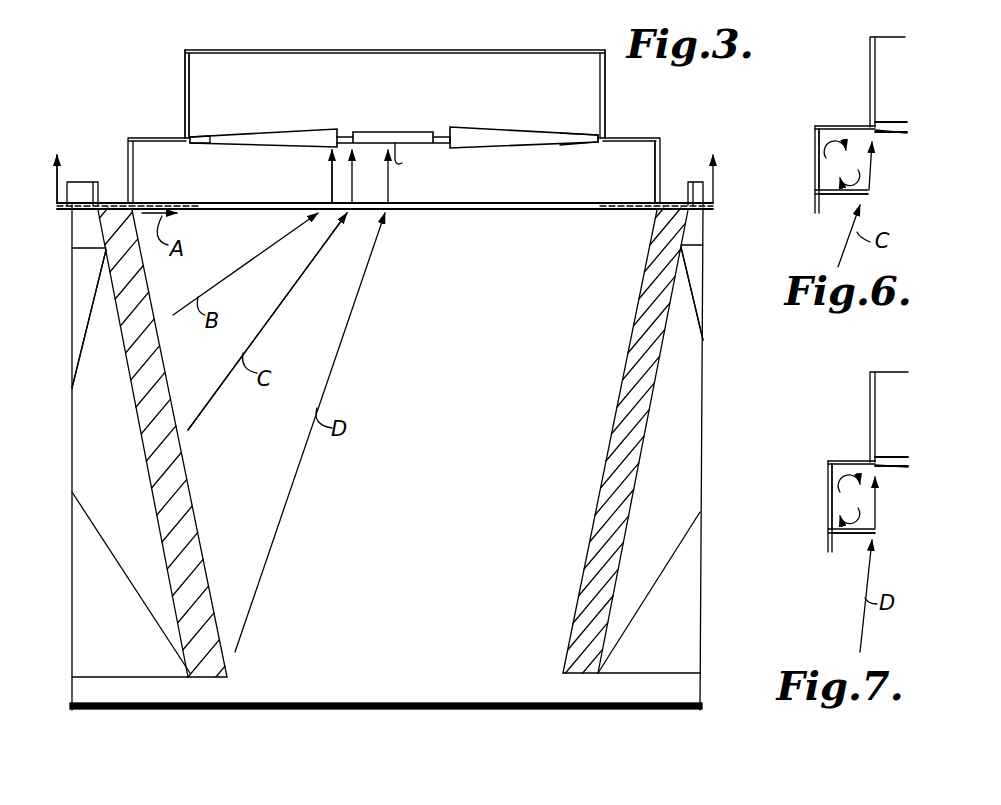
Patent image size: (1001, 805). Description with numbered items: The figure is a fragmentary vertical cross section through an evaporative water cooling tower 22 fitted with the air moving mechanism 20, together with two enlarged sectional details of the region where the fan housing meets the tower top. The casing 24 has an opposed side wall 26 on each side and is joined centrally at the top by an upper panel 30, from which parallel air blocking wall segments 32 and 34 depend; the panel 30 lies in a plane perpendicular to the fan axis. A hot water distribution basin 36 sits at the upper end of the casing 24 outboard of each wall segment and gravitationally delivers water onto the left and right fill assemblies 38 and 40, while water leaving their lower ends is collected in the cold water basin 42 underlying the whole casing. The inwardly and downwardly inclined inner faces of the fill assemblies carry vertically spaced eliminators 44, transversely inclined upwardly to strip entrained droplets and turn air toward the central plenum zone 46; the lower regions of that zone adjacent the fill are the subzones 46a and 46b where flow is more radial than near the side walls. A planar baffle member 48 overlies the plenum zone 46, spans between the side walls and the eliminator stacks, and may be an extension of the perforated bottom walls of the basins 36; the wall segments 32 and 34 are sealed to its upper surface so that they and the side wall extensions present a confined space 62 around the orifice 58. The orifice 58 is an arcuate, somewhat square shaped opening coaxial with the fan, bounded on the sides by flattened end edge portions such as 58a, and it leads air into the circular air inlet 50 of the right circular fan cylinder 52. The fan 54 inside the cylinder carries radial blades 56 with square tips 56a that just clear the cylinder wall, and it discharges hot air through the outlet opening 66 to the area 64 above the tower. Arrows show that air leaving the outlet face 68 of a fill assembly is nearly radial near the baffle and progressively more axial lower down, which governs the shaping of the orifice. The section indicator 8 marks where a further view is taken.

In FIG. 3, the air moving mechanism 20 is at (490, 68).
In FIG. 3, the cooling tower 22 is at (710, 410).
In FIG. 3, the casing 24 is at (700, 228).
In FIG. 3, the side wall 26 is at (508, 668).
In FIG. 6, the side wall 26 is at (815, 171).
In FIG. 7, the side wall 26 is at (828, 474).
In FIG. 3, the upper panel 30 is at (615, 136).
In FIG. 6, the upper panel 30 is at (840, 126).
In FIG. 7, the upper panel 30 is at (845, 460).
In FIG. 3, the wall segment 32 is at (130, 158).
In FIG. 3, the wall segment 34 is at (660, 140).
In FIG. 3, the hot water distribution basin 36 is at (80, 184).
In FIG. 3, the fill assembly 38 is at (131, 460).
In FIG. 3, the fill assembly 40 is at (688, 549).
In FIG. 3, the cold water basin 42 is at (298, 703).
In FIG. 3, the eliminators 44 is at (178, 478).
In FIG. 3, the plenum zone 46 is at (299, 432).
In FIG. 3, the subzone 46a is at (245, 290).
In FIG. 3, the subzone 46b is at (564, 355).
In FIG. 3, the baffle member 48 is at (642, 212).
In FIG. 6, the baffle member 48 is at (838, 200).
In FIG. 7, the baffle member 48 is at (860, 536).
In FIG. 3, the air inlet 50 is at (598, 143).
In FIG. 6, the air inlet 50 is at (876, 134).
In FIG. 7, the air inlet 50 is at (878, 468).
In FIG. 3, the fan cylinder 52 is at (185, 78).
In FIG. 6, the fan cylinder 52 is at (868, 62).
In FIG. 7, the fan cylinder 52 is at (868, 390).
In FIG. 3, the fan 54 is at (405, 130).
In FIG. 3, the radial blades 56 is at (300, 130).
In FIG. 6, the radial blades 56 is at (882, 122).
In FIG. 7, the radial blades 56 is at (880, 457).
In FIG. 3, the square tip 56a is at (203, 135).
In FIG. 3, the orifice 58 is at (500, 212).
In FIG. 6, the orifice 58 is at (868, 192).
In FIG. 7, the orifice 58 is at (876, 532).
In FIG. 3, the end edge portion 58a is at (165, 207).
In FIG. 3, the confined space 62 is at (640, 172).
In FIG. 6, the confined space 62 is at (823, 138).
In FIG. 7, the confined space 62 is at (848, 497).
In FIG. 3, the area above tower 64 is at (395, 78).
In FIG. 3, the outlet opening 66 is at (602, 48).
In FIG. 3, the outlet face 68 is at (138, 408).
In FIG. 3, the section line 8 is at (389, 160).